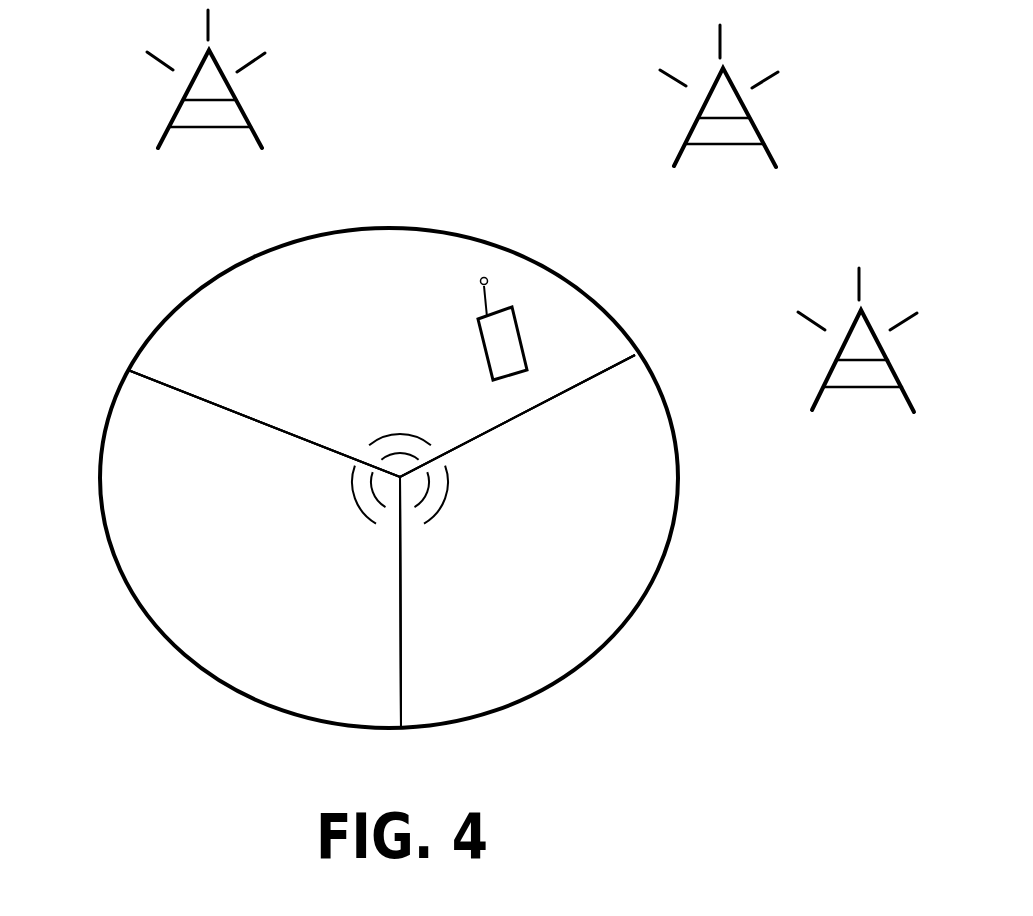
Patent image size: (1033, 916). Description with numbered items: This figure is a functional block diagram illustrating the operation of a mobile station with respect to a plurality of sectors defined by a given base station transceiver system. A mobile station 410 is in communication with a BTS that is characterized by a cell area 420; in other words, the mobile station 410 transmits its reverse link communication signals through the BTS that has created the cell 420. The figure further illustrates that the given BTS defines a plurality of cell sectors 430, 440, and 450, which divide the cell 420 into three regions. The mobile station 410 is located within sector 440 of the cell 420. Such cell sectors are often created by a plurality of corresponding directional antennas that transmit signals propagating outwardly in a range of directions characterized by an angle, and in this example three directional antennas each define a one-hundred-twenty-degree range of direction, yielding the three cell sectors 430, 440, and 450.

The mobile station 410 is at (480, 340).
The cell area 420 is at (676, 447).
The cell sector 430 is at (162, 555).
The cell sector 440 is at (379, 298).
The cell sector 450 is at (498, 627).